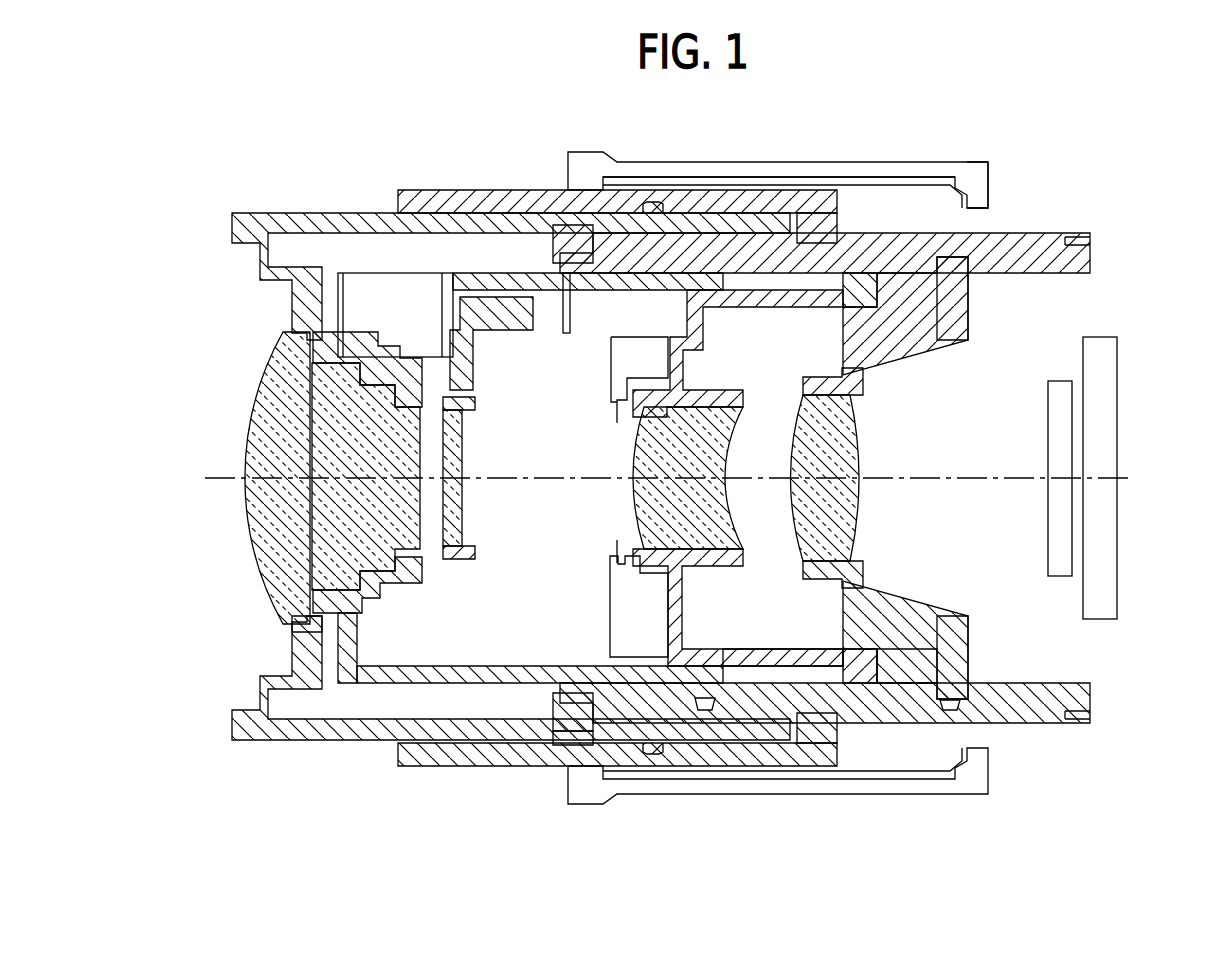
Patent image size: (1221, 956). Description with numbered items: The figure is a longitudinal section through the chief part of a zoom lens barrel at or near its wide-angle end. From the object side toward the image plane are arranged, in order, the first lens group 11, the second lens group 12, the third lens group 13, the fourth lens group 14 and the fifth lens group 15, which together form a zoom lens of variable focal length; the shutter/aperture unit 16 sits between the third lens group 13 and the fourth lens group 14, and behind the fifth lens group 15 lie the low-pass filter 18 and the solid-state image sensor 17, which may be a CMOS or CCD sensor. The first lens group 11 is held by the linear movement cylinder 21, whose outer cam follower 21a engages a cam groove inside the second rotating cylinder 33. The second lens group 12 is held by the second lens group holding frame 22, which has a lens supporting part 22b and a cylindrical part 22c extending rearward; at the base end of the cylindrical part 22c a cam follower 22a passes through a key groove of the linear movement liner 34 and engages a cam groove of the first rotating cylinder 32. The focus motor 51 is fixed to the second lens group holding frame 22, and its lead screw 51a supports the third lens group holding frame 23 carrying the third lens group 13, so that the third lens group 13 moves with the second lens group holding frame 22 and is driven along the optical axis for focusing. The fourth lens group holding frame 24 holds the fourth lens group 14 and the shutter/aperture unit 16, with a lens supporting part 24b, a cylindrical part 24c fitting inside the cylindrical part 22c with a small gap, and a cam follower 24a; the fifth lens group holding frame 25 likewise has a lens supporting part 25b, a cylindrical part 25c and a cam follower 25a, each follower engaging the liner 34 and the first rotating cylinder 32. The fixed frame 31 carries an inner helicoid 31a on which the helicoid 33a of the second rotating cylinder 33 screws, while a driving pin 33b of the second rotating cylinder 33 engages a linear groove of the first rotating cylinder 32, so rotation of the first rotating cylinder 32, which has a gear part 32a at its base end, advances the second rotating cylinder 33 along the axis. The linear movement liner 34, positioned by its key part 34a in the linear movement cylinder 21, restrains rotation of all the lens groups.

The first lens group 11 is at (273, 532).
The second lens group 12 is at (312, 567).
The third lens group 13 is at (440, 457).
The fourth lens group 14 is at (643, 493).
The fifth lens group 15 is at (855, 432).
The shutter/aperture unit 16 is at (620, 617).
The solid-state image sensor 17 is at (1100, 590).
The low-pass filter 18 is at (1058, 524).
The linear movement cylinder 21 is at (263, 745).
The cam follower 21a is at (657, 770).
The second lens group holding frame 22 is at (355, 686).
The cam follower 22a is at (706, 712).
The lens supporting part 22b is at (315, 623).
The cylindrical part 22c is at (500, 677).
The third lens group holding frame 23 is at (440, 402).
The fourth lens group holding frame 24 is at (686, 620).
The cam follower 24a is at (858, 688).
The lens supporting part 24b is at (573, 765).
The cylindrical part 24c is at (790, 668).
The fifth lens group holding frame 25 is at (865, 563).
The cam follower 25a is at (948, 712).
The lens supporting part 25b is at (975, 642).
The cylindrical part 25c is at (905, 636).
The fixed frame 31 is at (907, 165).
The helicoid 31a is at (657, 180).
The first rotating cylinder 32 is at (1020, 208).
The gear part 32a is at (1080, 208).
The second rotating cylinder 33 is at (548, 310).
The helicoid 33a is at (803, 187).
The driving pin 33b is at (823, 210).
The linear movement liner 34 is at (1088, 260).
The key part 34a is at (560, 225).
The focus motor 51 is at (372, 292).
The lead screw 51a is at (445, 275).